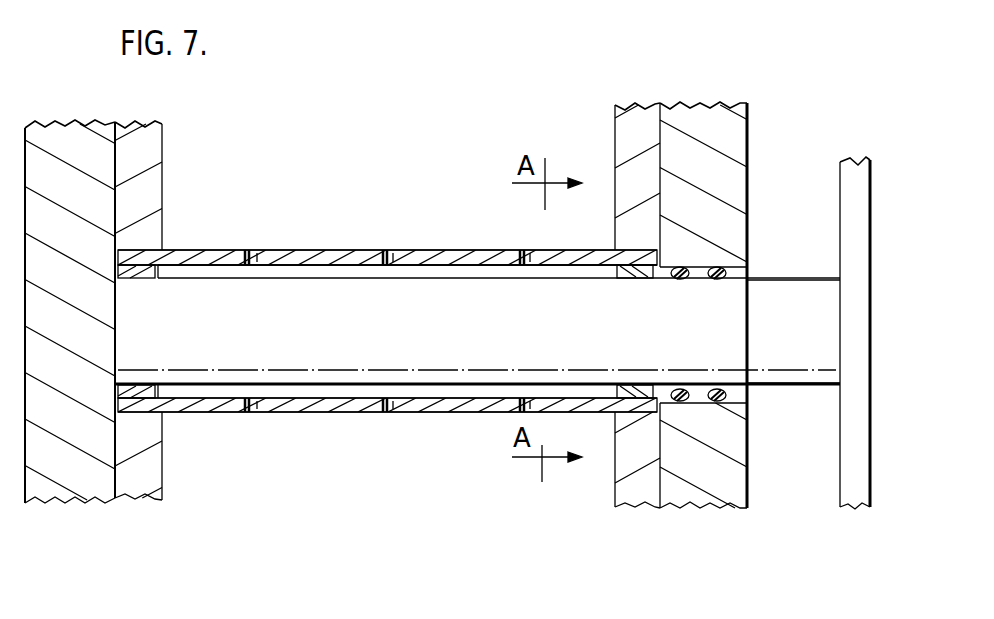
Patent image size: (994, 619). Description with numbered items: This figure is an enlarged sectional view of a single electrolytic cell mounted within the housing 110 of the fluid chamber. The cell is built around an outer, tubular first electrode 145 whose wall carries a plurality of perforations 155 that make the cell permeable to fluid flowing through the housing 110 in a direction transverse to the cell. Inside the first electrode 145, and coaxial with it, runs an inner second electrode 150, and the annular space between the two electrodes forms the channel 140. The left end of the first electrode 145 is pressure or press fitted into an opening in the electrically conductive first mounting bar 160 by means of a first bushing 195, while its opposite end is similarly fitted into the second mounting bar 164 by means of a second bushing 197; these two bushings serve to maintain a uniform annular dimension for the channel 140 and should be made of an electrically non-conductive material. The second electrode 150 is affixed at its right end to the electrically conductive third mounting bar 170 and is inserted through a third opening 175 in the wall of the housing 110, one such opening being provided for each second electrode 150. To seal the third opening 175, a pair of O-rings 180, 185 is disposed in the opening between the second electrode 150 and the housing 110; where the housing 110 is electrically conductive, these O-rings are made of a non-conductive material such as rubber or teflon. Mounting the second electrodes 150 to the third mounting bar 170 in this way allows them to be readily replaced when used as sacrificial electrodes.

The housing 110 is at (84, 487).
The channel 140 is at (397, 395).
The first electrode 145 is at (213, 255).
The second electrode 150 is at (775, 390).
The perforations 155 is at (272, 255).
The first mounting bar 160 is at (135, 470).
The second mounting bar 164 is at (626, 497).
The third mounting bar 170 is at (842, 485).
The third opening 175 is at (747, 274).
The O-ring 180 is at (683, 266).
The O-ring 185 is at (718, 266).
The first bushing 195 is at (163, 413).
The second bushing 197 is at (597, 255).